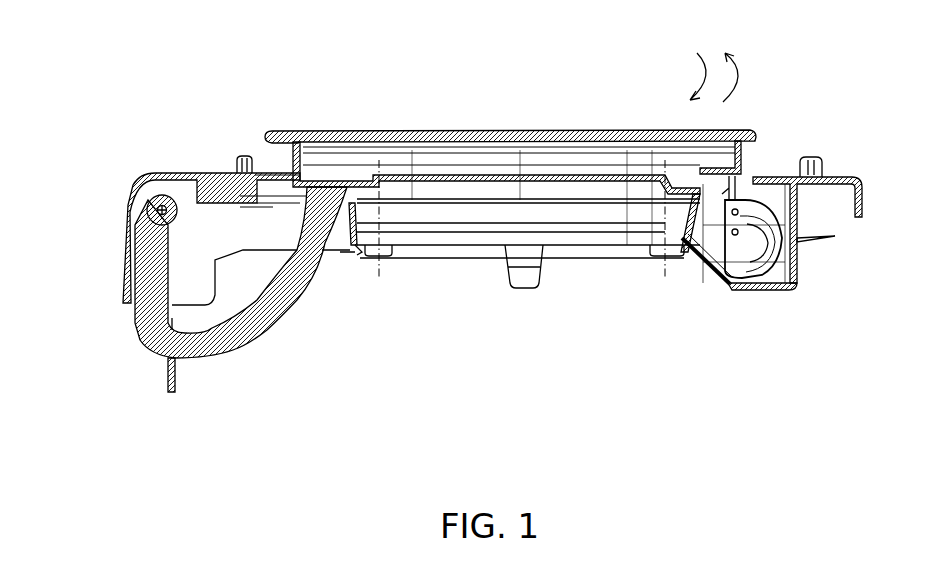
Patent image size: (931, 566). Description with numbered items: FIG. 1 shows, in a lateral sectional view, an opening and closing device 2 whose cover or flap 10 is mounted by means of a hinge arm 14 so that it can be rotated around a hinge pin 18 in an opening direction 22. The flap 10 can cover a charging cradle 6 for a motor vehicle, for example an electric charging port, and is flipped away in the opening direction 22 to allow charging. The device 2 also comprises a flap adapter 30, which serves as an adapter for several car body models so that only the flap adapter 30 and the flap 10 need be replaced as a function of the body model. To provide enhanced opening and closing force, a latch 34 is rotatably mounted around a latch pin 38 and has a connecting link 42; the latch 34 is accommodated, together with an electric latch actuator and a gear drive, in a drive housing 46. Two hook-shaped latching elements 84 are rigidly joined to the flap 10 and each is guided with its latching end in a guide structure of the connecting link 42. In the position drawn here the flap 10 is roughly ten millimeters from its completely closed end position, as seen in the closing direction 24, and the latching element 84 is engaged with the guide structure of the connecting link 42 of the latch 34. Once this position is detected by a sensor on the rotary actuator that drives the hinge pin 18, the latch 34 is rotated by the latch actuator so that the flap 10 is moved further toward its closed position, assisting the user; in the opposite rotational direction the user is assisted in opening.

The opening and closing device 2 is at (387, 72).
The flap 10 is at (580, 107).
The flap adapter 30 is at (743, 150).
The latching element 84 is at (735, 180).
The drive housing 46 is at (797, 287).
The latch 34 is at (760, 287).
The latch pin 38 is at (715, 265).
The connecting link 42 is at (770, 243).
The charging cradle 6 is at (172, 175).
The hinge pin 18 is at (133, 210).
The hinge arm 14 is at (278, 315).
The closing direction 24 is at (710, 73).
The opening direction 22 is at (742, 75).